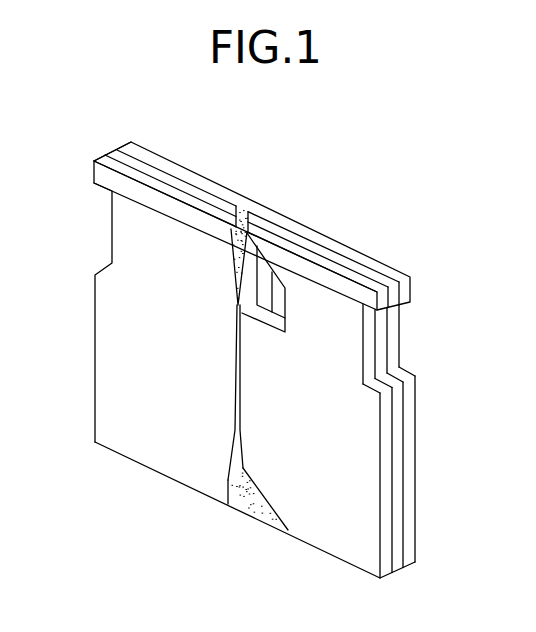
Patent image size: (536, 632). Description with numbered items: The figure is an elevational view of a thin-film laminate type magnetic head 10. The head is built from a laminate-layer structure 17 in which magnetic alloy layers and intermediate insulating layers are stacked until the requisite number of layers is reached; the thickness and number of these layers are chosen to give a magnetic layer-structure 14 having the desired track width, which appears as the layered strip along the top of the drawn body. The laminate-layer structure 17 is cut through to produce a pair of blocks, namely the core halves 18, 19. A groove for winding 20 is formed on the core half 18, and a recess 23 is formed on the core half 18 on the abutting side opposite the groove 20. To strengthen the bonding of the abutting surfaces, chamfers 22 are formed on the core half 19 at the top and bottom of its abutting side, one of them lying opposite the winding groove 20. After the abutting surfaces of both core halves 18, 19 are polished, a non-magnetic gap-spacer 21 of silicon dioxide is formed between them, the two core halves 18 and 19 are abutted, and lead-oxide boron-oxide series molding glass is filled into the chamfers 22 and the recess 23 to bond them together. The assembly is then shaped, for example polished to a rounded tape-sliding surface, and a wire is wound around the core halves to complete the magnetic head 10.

The magnetic head 10 is at (370, 193).
The magnetic layer-structure 14 is at (357, 252).
The laminate-layer structure 17 is at (400, 578).
The core half 18 is at (345, 537).
The core half 19 is at (172, 453).
The groove for winding 20 is at (275, 310).
The non-magnetic gap-spacer 21 is at (250, 207).
The chamfers 22 is at (232, 229).
The recess 23 is at (253, 502).